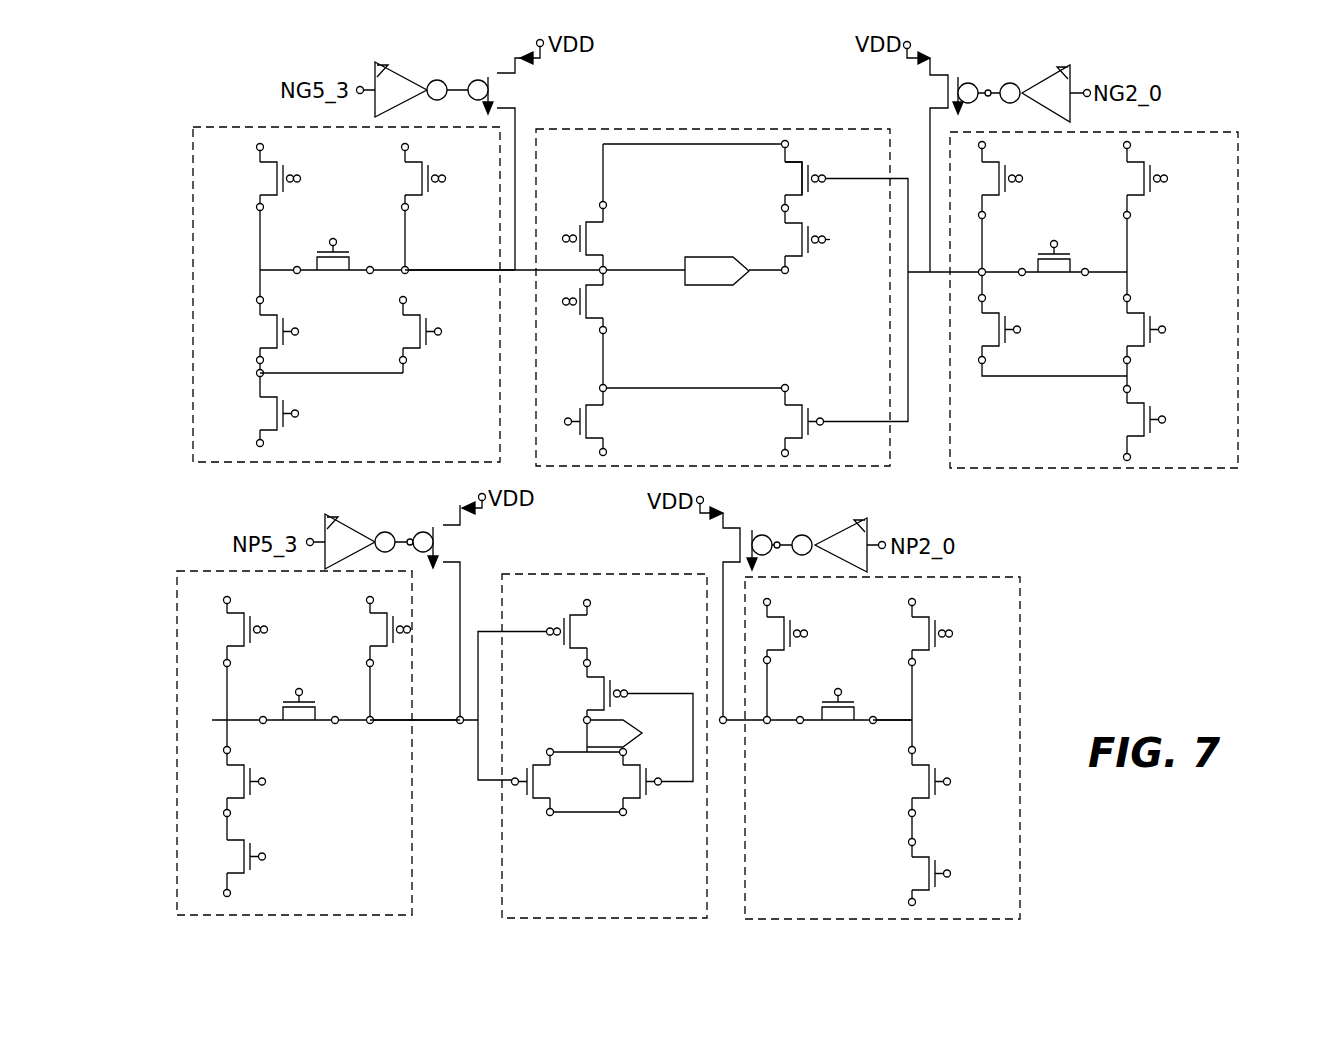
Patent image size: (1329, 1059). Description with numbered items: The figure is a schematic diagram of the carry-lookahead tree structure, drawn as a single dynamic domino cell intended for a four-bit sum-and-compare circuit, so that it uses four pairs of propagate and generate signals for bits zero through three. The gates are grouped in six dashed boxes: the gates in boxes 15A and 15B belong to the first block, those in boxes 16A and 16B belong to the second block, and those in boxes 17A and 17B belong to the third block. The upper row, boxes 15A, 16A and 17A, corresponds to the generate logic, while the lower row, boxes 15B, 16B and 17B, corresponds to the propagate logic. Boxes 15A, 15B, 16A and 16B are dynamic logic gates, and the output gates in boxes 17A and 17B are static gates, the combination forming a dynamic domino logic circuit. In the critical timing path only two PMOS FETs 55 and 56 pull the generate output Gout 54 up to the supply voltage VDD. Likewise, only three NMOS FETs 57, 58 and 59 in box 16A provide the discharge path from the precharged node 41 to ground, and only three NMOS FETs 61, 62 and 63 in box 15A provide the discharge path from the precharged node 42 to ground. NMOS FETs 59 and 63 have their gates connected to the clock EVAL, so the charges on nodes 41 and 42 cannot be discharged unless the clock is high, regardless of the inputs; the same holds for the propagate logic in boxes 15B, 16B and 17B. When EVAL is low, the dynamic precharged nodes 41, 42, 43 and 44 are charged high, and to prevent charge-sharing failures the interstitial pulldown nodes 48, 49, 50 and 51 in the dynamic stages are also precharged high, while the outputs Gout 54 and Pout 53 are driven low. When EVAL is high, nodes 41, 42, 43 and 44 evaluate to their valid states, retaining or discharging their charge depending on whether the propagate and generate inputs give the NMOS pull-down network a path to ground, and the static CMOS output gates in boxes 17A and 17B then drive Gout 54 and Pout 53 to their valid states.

The dashed box 15A is at (1111, 288).
The dashed box 15B is at (314, 721).
The dashed box 16A is at (385, 271).
The dashed box 16B is at (907, 735).
The dashed box 17A is at (710, 427).
The dashed box 17B is at (592, 722).
The precharged node 41 is at (460, 295).
The precharged node 42 is at (1040, 302).
The precharged node 43 is at (799, 507).
The precharged node 44 is at (390, 748).
The interstitial pulldown node 48 is at (254, 801).
The interstitial pulldown node 49 is at (918, 733).
The interstitial pulldown node 50 is at (1146, 271).
The interstitial pulldown node 51 is at (245, 267).
The Pout output 53 is at (600, 745).
The Gout output 54 is at (690, 291).
The PMOS FET 55 is at (827, 169).
The PMOS FET 56 is at (840, 233).
The NMOS FET 57 is at (321, 238).
The NMOS FET 58 is at (279, 328).
The NMOS FET 59 is at (289, 417).
The NMOS FET 61 is at (1047, 261).
The NMOS FET 62 is at (1149, 339).
The NMOS FET 63 is at (1145, 427).